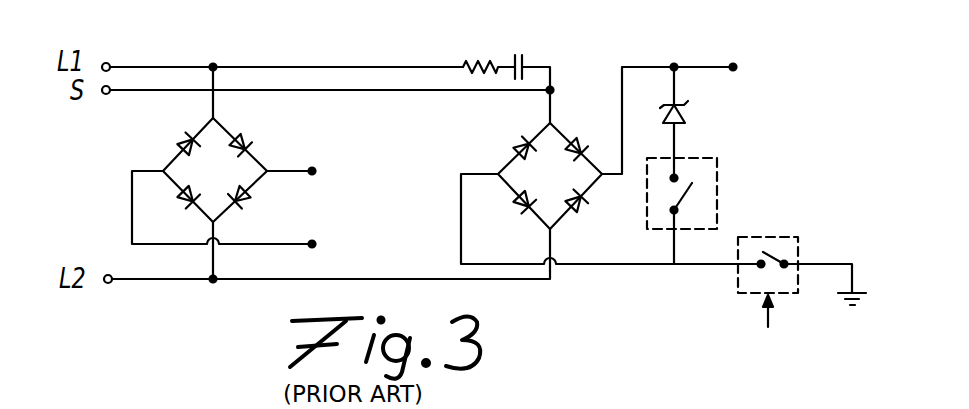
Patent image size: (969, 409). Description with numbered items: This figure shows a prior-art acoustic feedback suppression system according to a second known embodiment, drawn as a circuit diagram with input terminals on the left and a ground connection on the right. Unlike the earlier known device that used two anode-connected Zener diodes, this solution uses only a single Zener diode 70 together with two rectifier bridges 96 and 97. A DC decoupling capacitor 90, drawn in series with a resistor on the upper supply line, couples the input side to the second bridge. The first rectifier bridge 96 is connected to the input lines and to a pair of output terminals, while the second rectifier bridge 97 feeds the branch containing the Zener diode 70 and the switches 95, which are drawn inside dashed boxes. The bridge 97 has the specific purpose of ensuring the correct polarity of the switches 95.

The DC decoupling capacitor 90 is at (520, 53).
The rectifier bridge 96 is at (292, 119).
The rectifier bridge 97 is at (568, 131).
The Zener diode 70 is at (690, 113).
The switches 95 is at (717, 192).